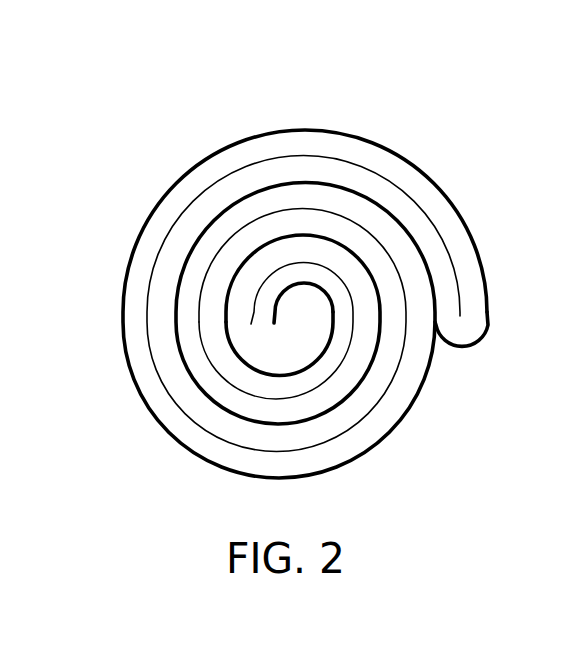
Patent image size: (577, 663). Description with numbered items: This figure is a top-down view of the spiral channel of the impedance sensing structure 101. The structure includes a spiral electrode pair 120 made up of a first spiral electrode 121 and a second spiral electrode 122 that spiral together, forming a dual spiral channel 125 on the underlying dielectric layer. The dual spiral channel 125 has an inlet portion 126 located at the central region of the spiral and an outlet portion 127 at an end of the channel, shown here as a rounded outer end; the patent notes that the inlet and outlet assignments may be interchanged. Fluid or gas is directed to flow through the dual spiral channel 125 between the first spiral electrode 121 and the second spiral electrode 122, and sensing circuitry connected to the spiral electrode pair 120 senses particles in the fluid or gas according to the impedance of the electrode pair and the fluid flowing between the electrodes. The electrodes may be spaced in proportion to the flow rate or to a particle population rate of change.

The impedance sensing structure 101 is at (162, 146).
The spiral electrode pair 120 is at (119, 256).
The first spiral electrode 121 is at (266, 270).
The second spiral electrode 122 is at (332, 305).
The dual spiral channel 125 is at (180, 397).
The inlet portion 126 is at (272, 357).
The outlet portion 127 is at (467, 328).